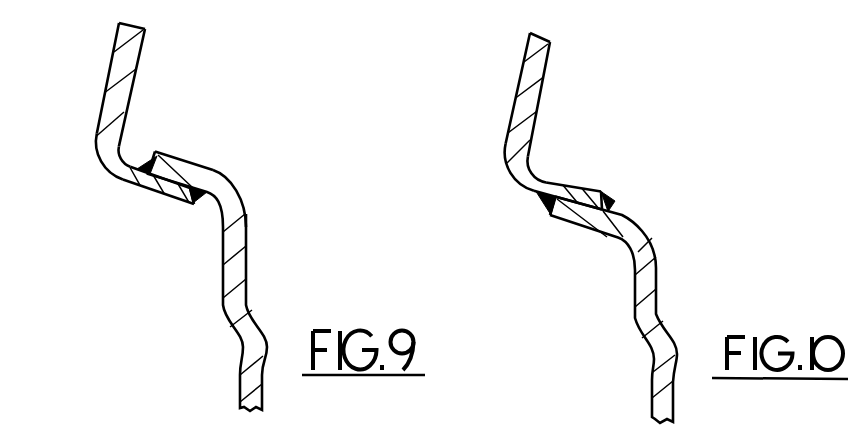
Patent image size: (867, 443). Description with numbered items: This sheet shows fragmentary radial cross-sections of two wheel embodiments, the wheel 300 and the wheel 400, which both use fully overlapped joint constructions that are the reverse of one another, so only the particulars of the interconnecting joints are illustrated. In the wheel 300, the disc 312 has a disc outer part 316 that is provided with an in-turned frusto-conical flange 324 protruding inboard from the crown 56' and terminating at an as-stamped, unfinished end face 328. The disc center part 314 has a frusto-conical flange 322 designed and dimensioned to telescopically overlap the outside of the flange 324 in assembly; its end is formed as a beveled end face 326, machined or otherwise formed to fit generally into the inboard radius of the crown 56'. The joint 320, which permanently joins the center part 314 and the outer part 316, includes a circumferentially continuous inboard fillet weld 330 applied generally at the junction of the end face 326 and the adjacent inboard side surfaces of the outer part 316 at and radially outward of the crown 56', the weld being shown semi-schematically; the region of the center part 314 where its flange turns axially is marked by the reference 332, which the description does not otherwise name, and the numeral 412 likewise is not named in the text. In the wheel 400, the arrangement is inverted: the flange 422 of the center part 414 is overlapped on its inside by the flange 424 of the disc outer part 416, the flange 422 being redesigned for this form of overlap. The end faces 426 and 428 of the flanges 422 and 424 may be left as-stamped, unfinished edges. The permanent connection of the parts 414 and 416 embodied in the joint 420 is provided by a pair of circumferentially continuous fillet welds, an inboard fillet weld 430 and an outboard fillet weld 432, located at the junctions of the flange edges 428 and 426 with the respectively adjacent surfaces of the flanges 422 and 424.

In FIG. 9, the wheel 300 is at (166, 77).
In FIG. 9, the disc 312 is at (114, 54).
In FIG. 9, the disc center part 314 is at (222, 304).
In FIG. 9, the disc outer part 316 is at (73, 132).
In FIG. 9, the crown 56' is at (86, 164).
In FIG. 10, the crown 56' is at (491, 173).
In FIG. 9, the joint 320 is at (128, 218).
In FIG. 9, the frusto-conical flange 322 is at (232, 186).
In FIG. 9, the in-turned frusto-conical flange 324 is at (133, 184).
In FIG. 9, the beveled end face 326 is at (163, 150).
In FIG. 9, the end face 328 is at (197, 204).
In FIG. 9, the inboard fillet weld 330 is at (148, 157).
In FIG. 9, the edge of second strip 332 is at (246, 218).
In FIG. 10, the wheel 400 is at (613, 122).
In FIG. 10, the first sheet metal strip (upper leg) 412 is at (524, 59).
In FIG. 10, the center part 414 is at (639, 332).
In FIG. 10, the disc outer part 416 is at (479, 146).
In FIG. 10, the joint 420 is at (602, 212).
In FIG. 10, the flange 422 is at (567, 256).
In FIG. 10, the flange 424 is at (567, 185).
In FIG. 10, the end face 426 is at (549, 214).
In FIG. 10, the end face 428 is at (609, 196).
In FIG. 10, the inboard fillet weld 430 is at (616, 209).
In FIG. 10, the outboard fillet weld 432 is at (540, 195).